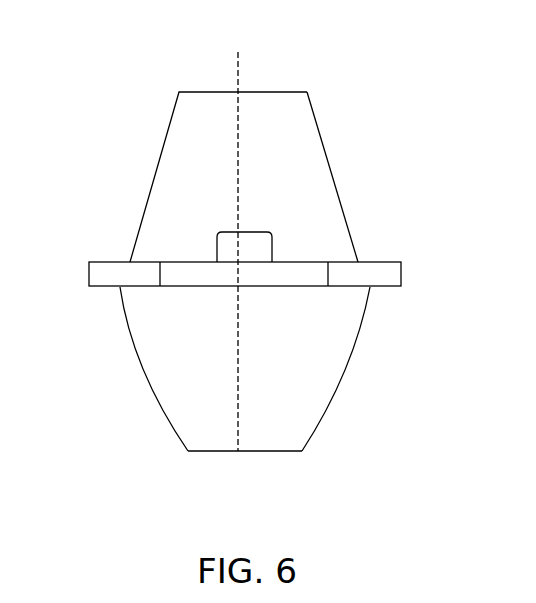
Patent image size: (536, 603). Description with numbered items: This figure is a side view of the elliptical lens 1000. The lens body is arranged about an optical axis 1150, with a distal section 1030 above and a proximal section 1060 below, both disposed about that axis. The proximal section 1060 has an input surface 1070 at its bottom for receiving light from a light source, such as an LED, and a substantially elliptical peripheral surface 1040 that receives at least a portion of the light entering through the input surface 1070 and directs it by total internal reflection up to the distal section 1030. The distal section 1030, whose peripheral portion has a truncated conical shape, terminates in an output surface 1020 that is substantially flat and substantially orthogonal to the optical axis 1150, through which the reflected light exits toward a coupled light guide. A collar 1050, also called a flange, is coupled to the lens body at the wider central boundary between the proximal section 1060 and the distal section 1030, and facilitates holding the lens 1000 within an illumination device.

The lens 1000 is at (168, 482).
The output surface 1020 is at (272, 92).
The distal section 1030 is at (322, 214).
The elliptical peripheral surface 1040 is at (152, 298).
The collar 1050 is at (390, 269).
The proximal section 1060 is at (331, 357).
The input surface 1070 is at (238, 452).
The optical axis 1150 is at (238, 138).